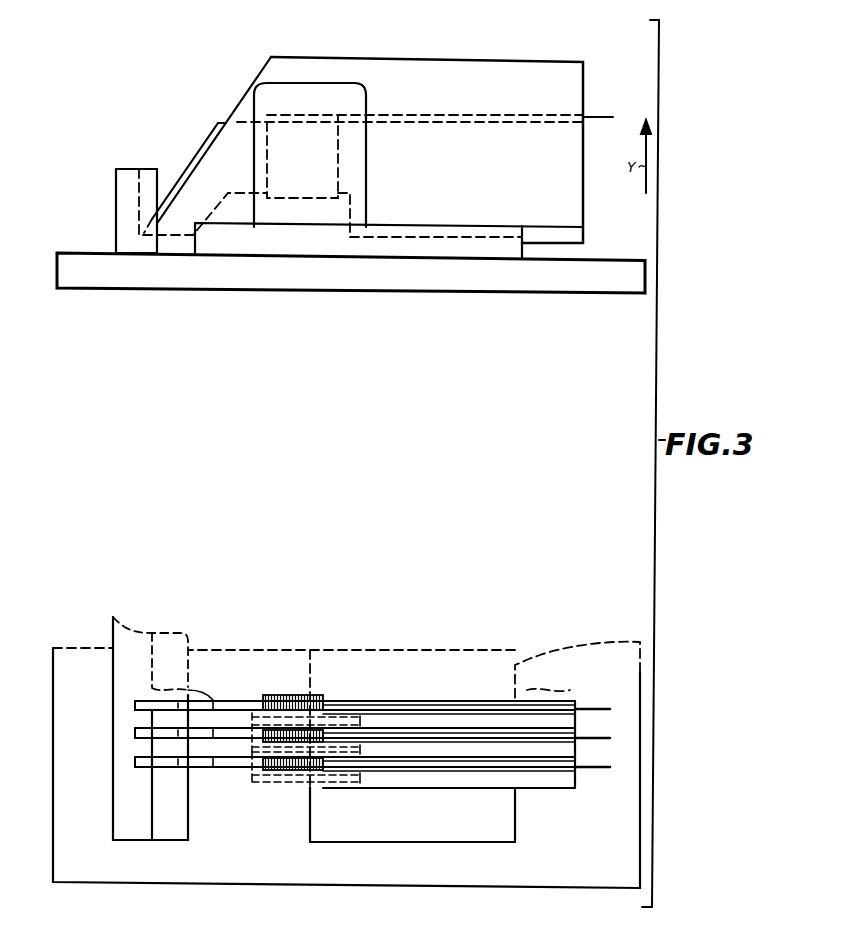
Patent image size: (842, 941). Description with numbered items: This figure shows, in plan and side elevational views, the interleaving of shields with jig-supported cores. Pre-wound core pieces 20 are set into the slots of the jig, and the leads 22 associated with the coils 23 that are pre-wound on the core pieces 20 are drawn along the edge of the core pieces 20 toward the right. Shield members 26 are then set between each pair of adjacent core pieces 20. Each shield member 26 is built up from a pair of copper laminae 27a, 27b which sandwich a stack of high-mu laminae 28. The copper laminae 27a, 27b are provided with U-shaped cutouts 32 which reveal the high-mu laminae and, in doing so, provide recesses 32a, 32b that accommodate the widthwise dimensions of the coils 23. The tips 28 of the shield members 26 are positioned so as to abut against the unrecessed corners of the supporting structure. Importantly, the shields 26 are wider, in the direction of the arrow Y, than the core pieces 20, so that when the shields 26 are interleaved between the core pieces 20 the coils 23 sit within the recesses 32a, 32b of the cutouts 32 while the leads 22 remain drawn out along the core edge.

The core piece 20 is at (198, 147).
The leads 22 is at (605, 117).
The coil 23 is at (282, 112).
The shield member 26 is at (478, 58).
The copper lamina 27a is at (452, 733).
The copper lamina 27b is at (438, 710).
The high-mu laminae / tips of the shield members 28 is at (348, 89).
The U-shaped cutout 32 is at (366, 172).
The recess 32a is at (272, 773).
The recess 32b is at (322, 758).